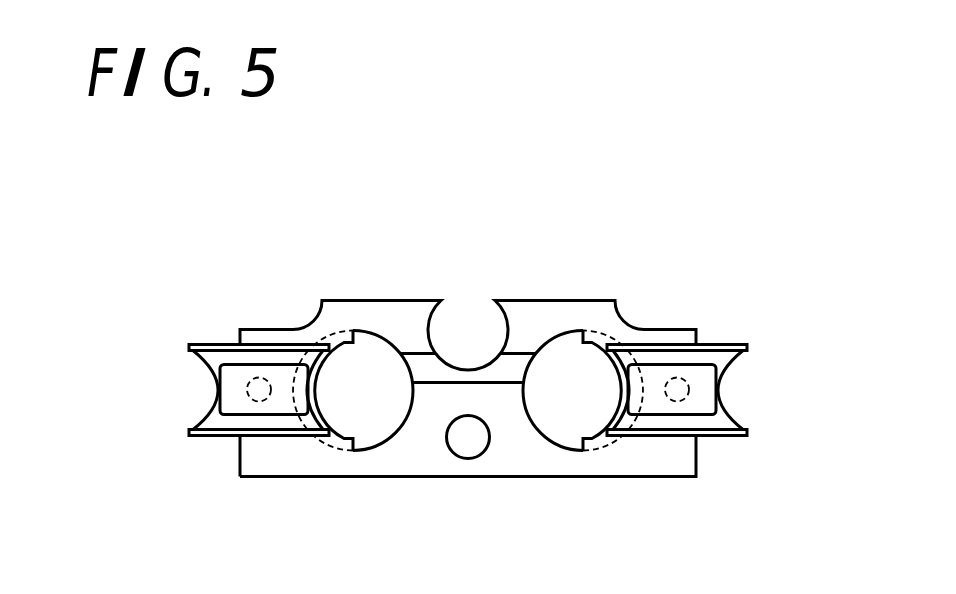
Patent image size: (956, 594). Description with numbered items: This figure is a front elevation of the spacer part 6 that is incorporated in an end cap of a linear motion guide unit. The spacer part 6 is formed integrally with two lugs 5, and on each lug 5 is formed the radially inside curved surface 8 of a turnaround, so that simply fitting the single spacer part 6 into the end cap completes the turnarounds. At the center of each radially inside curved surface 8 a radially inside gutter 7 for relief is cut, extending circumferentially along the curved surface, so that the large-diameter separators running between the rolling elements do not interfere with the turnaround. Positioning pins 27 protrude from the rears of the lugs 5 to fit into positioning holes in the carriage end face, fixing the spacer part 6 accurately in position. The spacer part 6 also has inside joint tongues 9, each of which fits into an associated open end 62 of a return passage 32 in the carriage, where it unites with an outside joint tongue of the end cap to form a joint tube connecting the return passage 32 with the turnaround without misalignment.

The lug 5 is at (474, 386).
The spacer part 6 is at (566, 292).
The radially inside gutter 7 is at (221, 390).
The radially inside curved surface 8 is at (228, 416).
The inside joint tongue 9 is at (327, 438).
The positioning pin 27 is at (252, 370).
The return passage 32 is at (329, 374).
The open end 62 is at (365, 346).